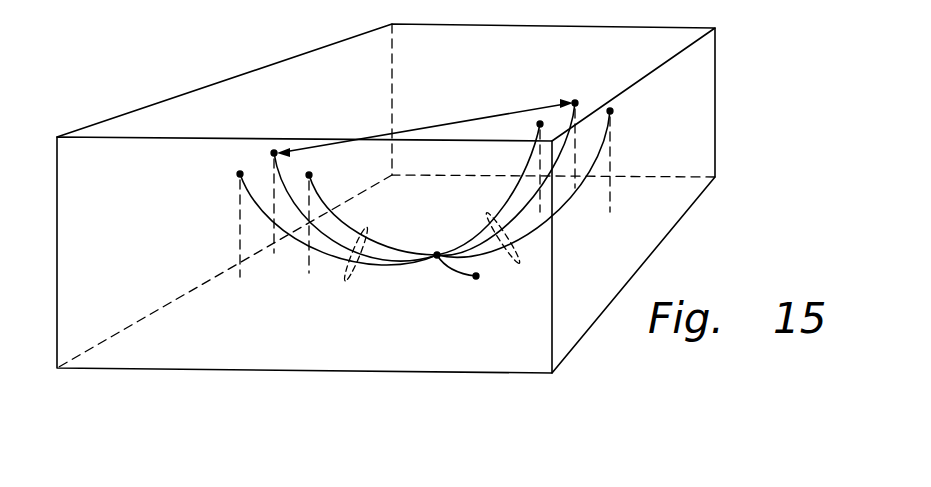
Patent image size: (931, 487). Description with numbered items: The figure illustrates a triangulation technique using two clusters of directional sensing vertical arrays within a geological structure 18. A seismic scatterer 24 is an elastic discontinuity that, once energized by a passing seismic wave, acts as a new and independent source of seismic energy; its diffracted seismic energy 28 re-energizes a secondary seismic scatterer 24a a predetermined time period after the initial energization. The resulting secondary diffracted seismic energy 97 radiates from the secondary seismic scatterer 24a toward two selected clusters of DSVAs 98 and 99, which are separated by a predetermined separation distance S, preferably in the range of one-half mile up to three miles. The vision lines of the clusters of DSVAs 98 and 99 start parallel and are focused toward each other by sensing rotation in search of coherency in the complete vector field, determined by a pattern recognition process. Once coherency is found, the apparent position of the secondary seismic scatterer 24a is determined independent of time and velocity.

The geological structure 18 is at (275, 372).
The seismic scatterer 24 is at (477, 279).
The secondary seismic scatterer 24a is at (436, 253).
The diffracted seismic energy 28 is at (457, 273).
The secondary diffracted seismic energy 97 is at (349, 279).
The cluster of DSVAs 98 is at (205, 212).
The cluster of DSVAs 99 is at (545, 85).
The separation distance S is at (437, 125).